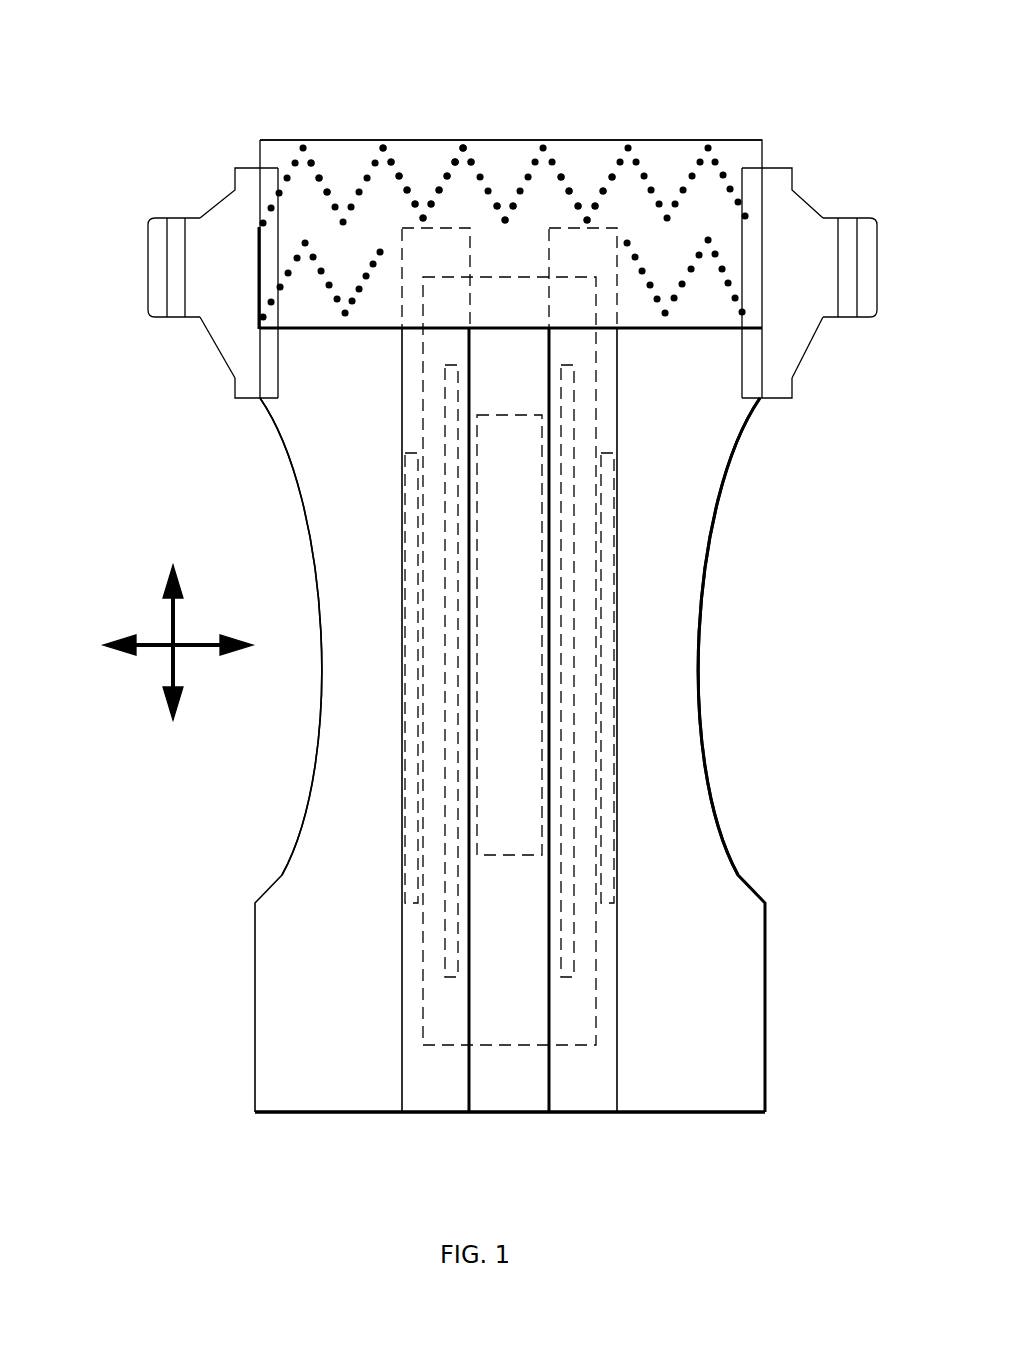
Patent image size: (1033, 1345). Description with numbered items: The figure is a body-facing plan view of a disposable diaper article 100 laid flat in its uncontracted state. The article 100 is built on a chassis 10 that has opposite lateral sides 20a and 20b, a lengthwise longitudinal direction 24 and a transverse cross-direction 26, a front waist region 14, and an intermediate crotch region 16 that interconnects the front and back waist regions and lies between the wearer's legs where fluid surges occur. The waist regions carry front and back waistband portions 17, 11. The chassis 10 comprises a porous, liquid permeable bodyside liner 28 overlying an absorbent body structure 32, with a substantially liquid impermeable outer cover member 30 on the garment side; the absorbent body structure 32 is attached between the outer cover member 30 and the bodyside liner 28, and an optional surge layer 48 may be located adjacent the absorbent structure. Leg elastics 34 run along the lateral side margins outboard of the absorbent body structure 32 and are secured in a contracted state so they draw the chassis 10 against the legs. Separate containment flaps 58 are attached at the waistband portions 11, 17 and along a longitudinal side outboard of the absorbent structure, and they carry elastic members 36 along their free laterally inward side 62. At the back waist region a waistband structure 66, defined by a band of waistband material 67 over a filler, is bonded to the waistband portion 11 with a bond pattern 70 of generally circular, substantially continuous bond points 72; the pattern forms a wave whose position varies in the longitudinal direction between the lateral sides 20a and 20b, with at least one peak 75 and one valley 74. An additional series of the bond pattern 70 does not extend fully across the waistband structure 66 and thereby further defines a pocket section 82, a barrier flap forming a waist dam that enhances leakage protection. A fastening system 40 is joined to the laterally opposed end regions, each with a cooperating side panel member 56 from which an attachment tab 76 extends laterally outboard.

The absorbent article 100 is at (548, 70).
The chassis 10 is at (685, 758).
The back waistband portion 11 is at (370, 140).
The front waist region 14 is at (278, 1082).
The intermediate crotch region 16 is at (682, 610).
The front waistband portion 17 is at (437, 1093).
The lateral side 20a is at (257, 400).
The lateral side 20b is at (757, 402).
The longitudinal direction 24 is at (193, 650).
The transverse cross-direction 26 is at (176, 612).
The bodyside liner 28 is at (402, 555).
The outer cover member 30 is at (690, 1078).
The absorbent body structure 32 is at (580, 325).
The leg elastics 34 is at (403, 668).
The elastic members 36 is at (445, 398).
The fastening system 40 is at (218, 195).
The surge layer 48 is at (520, 525).
The side panel member 56 is at (217, 322).
The containment flaps 58 is at (609, 437).
The free laterally inward side 62 is at (435, 340).
The waistband structure 66 is at (432, 160).
The waistband material 67 is at (593, 165).
The bond pattern 70 is at (700, 157).
The bond points 72 is at (329, 178).
The valley 74 is at (507, 222).
The peak 75 is at (465, 150).
The attachment tab 76 is at (175, 268).
The pocket section 82 is at (527, 328).